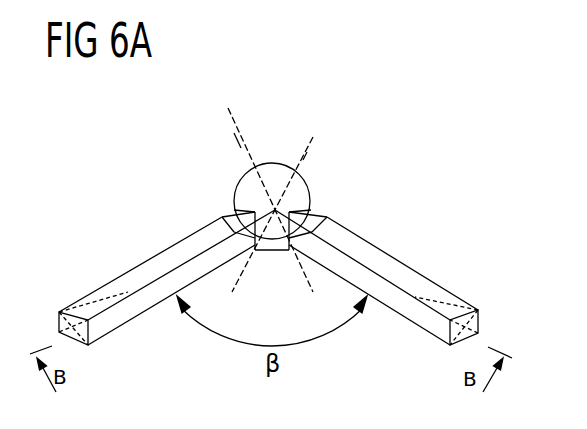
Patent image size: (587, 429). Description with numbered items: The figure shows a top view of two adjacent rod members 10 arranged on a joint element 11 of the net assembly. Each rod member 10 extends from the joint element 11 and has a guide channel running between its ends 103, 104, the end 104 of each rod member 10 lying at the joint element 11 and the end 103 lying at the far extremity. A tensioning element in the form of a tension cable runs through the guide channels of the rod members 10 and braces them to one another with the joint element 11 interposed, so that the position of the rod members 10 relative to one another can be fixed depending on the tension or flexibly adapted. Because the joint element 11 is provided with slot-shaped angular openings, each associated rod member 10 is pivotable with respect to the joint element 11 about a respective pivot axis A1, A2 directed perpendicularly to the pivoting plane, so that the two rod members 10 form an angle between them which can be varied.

The rod member 10 is at (162, 260).
The joint element 11 is at (276, 176).
The end of rod member 103 is at (95, 345).
The end of rod member 104 is at (222, 212).
The pivot axis A1 is at (261, 189).
The pivot axis A2 is at (297, 167).